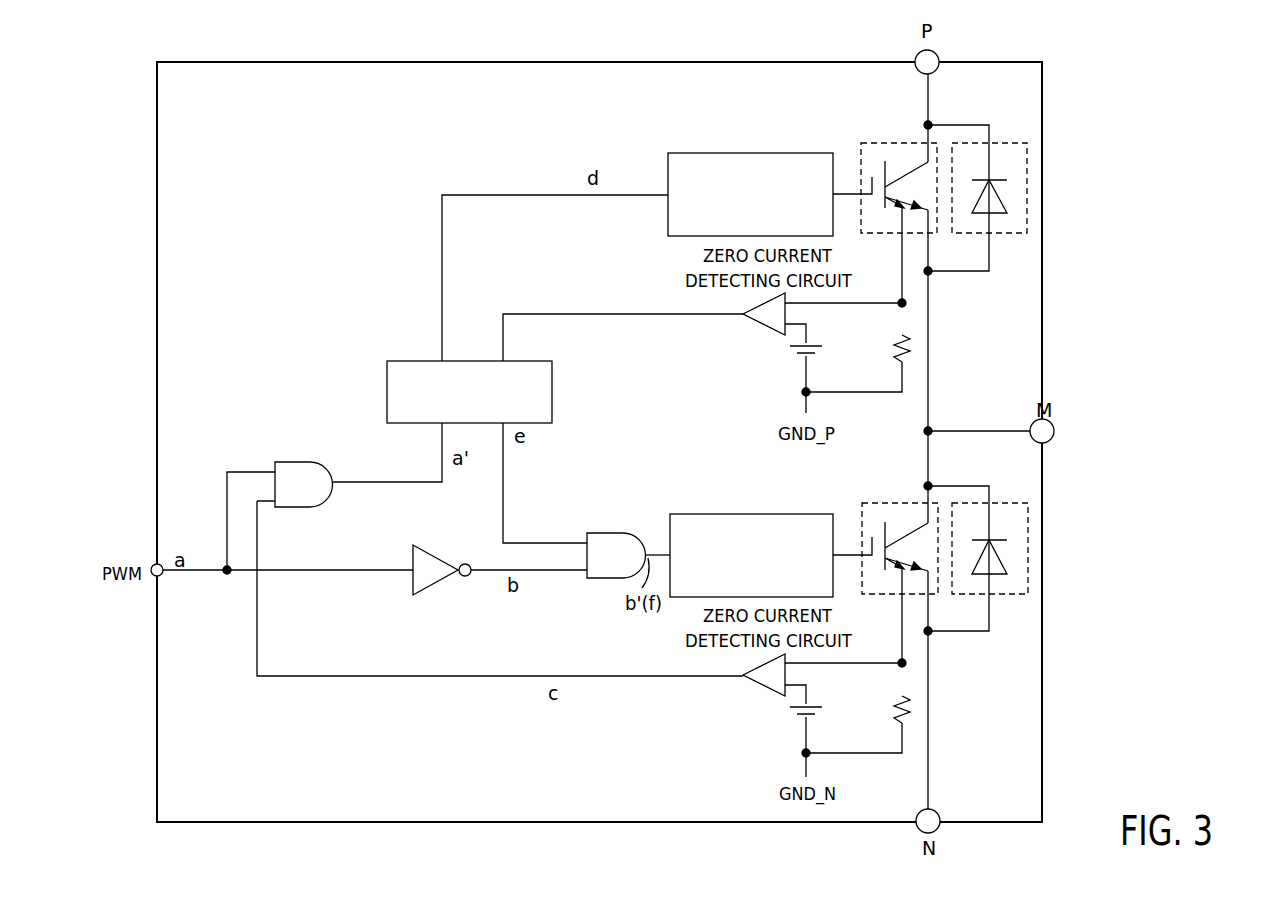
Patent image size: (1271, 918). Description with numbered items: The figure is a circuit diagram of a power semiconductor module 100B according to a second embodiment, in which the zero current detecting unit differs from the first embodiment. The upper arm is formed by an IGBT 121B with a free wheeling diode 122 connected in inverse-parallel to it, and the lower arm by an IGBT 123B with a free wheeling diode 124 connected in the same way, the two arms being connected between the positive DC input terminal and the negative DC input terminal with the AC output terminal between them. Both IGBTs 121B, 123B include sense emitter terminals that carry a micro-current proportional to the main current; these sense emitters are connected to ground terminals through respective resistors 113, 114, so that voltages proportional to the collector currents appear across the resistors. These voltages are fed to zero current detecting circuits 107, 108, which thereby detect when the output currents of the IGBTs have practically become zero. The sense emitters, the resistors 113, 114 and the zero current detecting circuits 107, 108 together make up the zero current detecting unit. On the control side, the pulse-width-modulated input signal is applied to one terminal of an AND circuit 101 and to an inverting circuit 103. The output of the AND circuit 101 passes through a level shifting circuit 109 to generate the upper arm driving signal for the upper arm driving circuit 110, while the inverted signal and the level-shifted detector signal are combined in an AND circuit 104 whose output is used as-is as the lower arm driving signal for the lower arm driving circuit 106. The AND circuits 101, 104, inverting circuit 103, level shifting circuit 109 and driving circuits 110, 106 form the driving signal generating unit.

The power semiconductor module 100B is at (220, 78).
The AND circuit 101 is at (290, 468).
The inverting circuit 103 is at (435, 578).
The AND circuit 104 is at (602, 540).
The lower arm driving circuit 106 is at (793, 523).
The zero current detecting circuit 107 is at (763, 318).
The zero current detecting circuit 108 is at (763, 680).
The level shifting circuit 109 is at (393, 370).
The upper arm driving circuit 110 is at (792, 162).
The resistor 113 is at (892, 350).
The resistor 114 is at (892, 710).
The IGBT 121B is at (877, 143).
The free wheeling diode 122 is at (1000, 143).
The IGBT 123B is at (878, 503).
The free wheeling diode 124 is at (1000, 503).